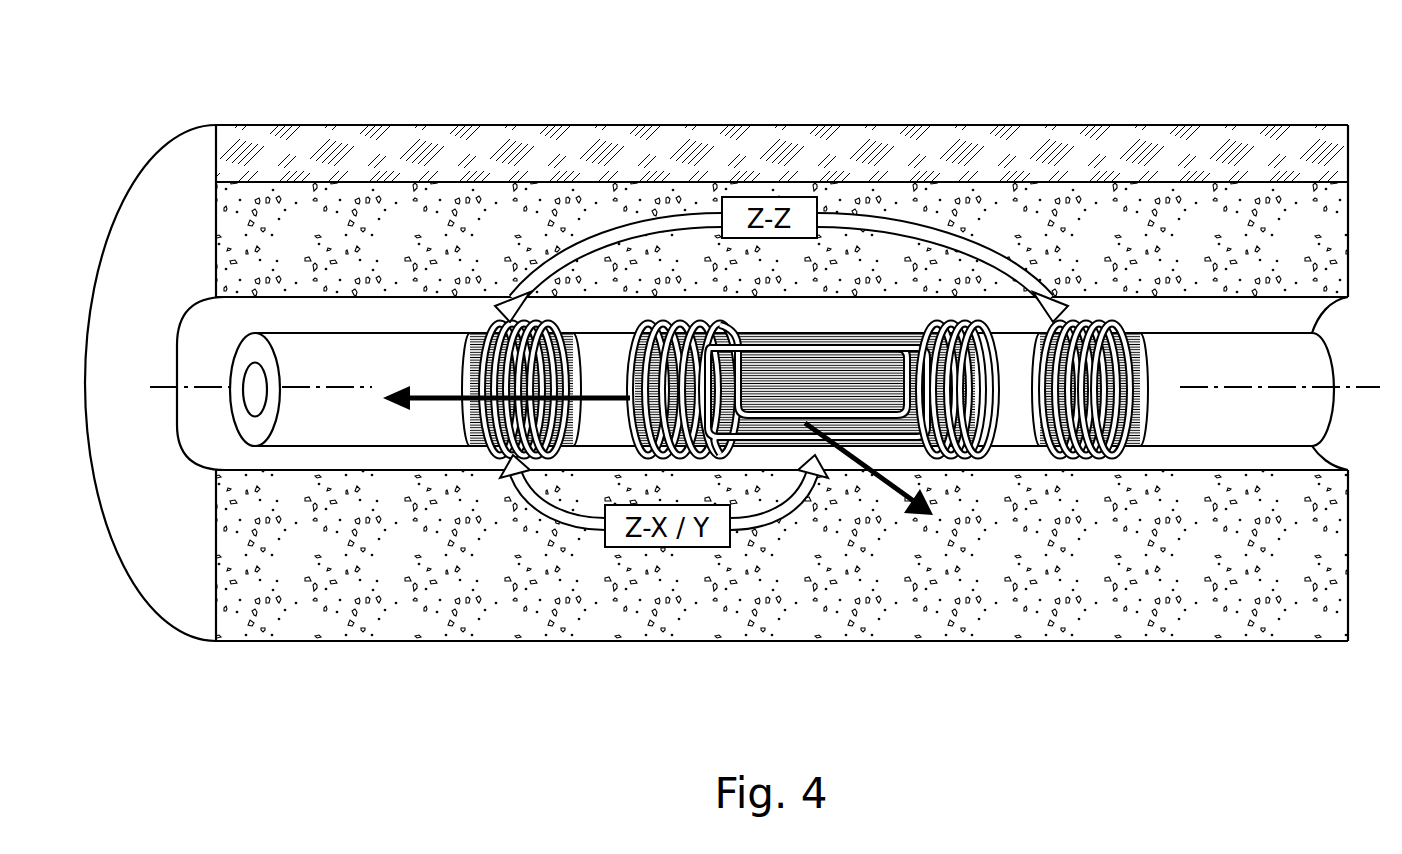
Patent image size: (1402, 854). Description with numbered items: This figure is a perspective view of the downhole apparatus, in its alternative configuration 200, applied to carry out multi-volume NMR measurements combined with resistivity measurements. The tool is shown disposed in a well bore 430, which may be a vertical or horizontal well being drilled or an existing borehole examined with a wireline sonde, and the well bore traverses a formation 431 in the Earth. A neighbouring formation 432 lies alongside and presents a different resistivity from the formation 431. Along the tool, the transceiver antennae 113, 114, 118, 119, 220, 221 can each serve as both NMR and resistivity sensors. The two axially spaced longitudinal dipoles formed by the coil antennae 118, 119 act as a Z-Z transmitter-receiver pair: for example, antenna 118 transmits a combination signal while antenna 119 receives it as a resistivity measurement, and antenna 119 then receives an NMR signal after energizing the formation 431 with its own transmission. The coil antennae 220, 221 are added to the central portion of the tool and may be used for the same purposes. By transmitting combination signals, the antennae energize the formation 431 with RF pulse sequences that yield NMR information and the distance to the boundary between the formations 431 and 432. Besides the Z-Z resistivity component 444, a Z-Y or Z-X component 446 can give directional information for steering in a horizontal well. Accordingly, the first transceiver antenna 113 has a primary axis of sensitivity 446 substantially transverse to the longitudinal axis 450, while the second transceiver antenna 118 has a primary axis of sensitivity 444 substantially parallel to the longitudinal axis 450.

The first transceiver antenna 113 is at (855, 345).
The transceiver antenna 114 is at (828, 440).
The second transceiver antenna 118 is at (492, 455).
The transceiver antenna 119 is at (1095, 455).
The alternative configuration 200 is at (618, 312).
The transceiver antenna 220 is at (610, 455).
The transceiver antenna 221 is at (935, 455).
The well bore 430 is at (200, 303).
The formation 431 is at (445, 200).
The formation 432 is at (595, 140).
The Z-Z resistivity component 444 is at (416, 410).
The Z-Y or Z-X component 446 is at (920, 520).
The longitudinal axis 450 is at (198, 392).